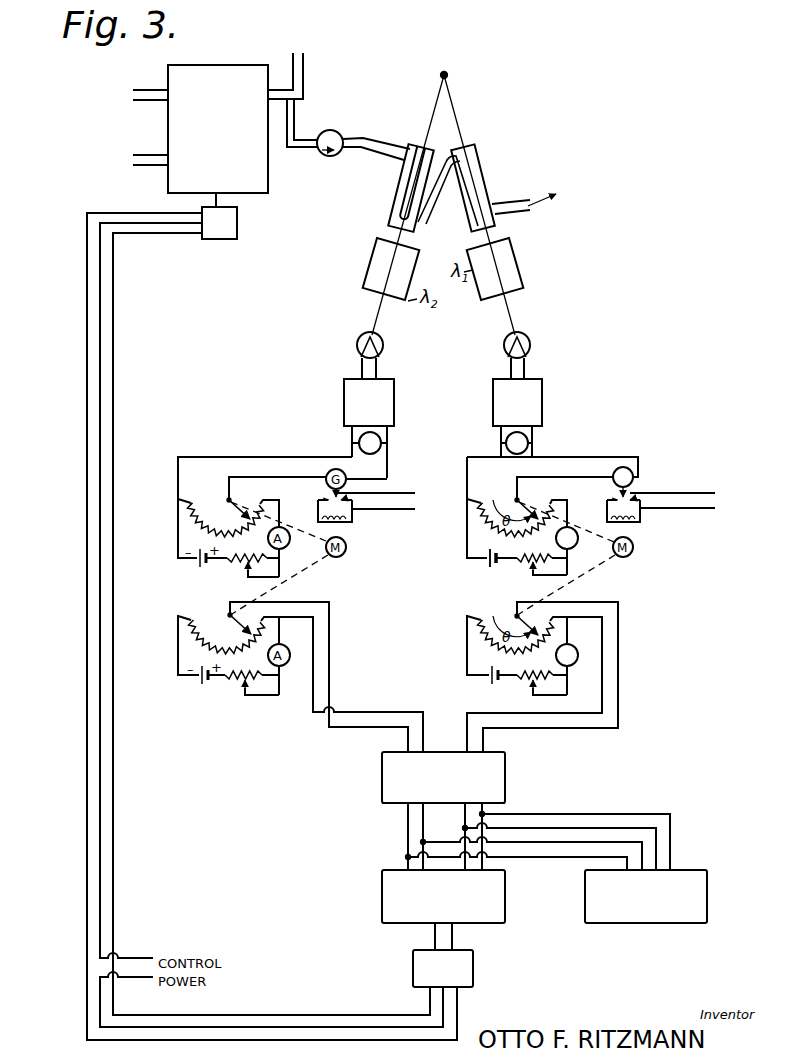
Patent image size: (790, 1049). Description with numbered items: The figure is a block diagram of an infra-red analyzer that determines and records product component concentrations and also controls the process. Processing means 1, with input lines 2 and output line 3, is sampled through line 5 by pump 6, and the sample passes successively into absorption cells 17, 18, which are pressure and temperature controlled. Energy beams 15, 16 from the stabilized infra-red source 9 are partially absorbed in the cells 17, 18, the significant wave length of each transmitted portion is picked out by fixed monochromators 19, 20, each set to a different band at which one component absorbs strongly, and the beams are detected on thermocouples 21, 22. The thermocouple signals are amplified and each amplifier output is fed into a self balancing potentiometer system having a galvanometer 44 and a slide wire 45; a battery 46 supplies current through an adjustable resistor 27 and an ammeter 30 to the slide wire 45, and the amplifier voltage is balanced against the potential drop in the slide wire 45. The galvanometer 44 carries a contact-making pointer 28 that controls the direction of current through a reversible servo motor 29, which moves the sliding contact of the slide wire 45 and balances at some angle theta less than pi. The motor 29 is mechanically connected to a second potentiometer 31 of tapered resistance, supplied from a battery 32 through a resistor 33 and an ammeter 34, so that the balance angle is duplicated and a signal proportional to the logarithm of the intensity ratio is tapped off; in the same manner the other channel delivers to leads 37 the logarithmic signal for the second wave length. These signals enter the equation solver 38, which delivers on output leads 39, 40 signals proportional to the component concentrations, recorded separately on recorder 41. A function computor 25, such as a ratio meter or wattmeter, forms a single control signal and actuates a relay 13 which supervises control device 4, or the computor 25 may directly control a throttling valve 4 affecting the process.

The processing means 1 is at (224, 69).
The input lines 2 is at (145, 97).
The output line 3 is at (296, 66).
The control device 4 is at (237, 222).
The sample line 5 is at (297, 108).
The pump 6 is at (330, 157).
The stabilized infra-red source 9 is at (449, 75).
The relay 13 is at (412, 965).
The energy beam 15 is at (434, 108).
The energy beam 16 is at (463, 108).
The absorption cell 17 is at (398, 184).
The absorption cell 18 is at (480, 160).
The fixed monochromator 19 is at (372, 257).
The fixed monochromator 20 is at (514, 258).
The thermocouple 21 is at (357, 345).
The thermocouple 22 is at (530, 345).
The function computor 25 is at (382, 876).
The adjustable resistor 27 is at (528, 570).
The contact-making pointer 28 is at (612, 493).
The reversible servo motor 29 is at (636, 524).
The ammeter 30 is at (573, 543).
The second potentiometer 31 is at (481, 638).
The battery 32 is at (490, 679).
The resistor 33 is at (532, 681).
The ammeter 34 is at (569, 665).
The leads 37 is at (405, 739).
The equation solver 38 is at (508, 773).
The output leads 39 is at (504, 802).
The output leads 40 is at (408, 817).
The recorder 41 is at (708, 888).
The galvanometer 44 is at (634, 474).
The slide wire 45 is at (489, 525).
The battery 46 is at (491, 561).